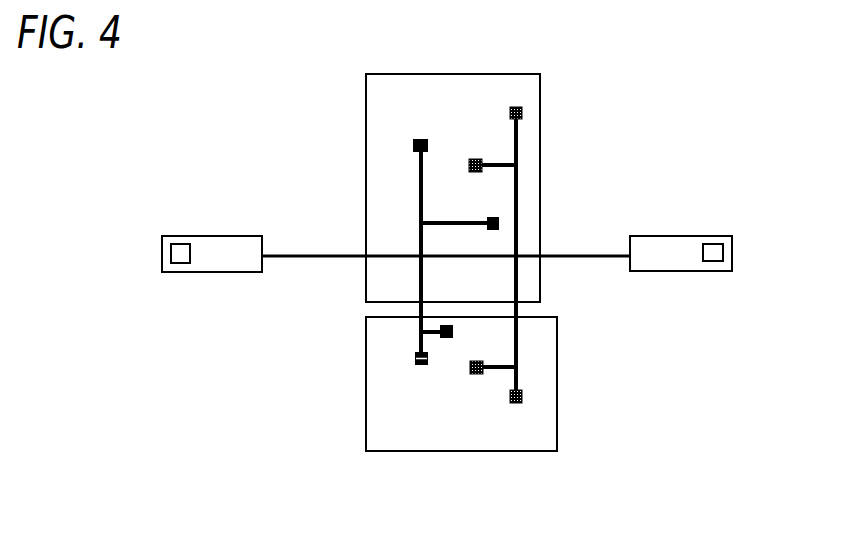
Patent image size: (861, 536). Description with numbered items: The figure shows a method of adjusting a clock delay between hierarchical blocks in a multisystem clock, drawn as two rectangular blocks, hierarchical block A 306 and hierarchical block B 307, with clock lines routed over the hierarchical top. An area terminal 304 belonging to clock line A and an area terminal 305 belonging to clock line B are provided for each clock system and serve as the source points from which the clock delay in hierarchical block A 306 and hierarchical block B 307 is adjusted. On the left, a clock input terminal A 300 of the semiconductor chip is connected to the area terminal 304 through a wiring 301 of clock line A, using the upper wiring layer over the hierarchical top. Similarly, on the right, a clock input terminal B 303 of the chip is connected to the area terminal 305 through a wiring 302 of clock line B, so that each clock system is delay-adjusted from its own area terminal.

The clock input terminal A 300 is at (198, 236).
The wiring of clock line A 301 is at (298, 254).
The wiring of clock line B 302 is at (604, 250).
The clock input terminal B 303 is at (710, 237).
The area terminal 304 is at (416, 366).
The area terminal 305 is at (516, 107).
The hierarchical block A 306 is at (373, 73).
The hierarchical block B 307 is at (373, 452).